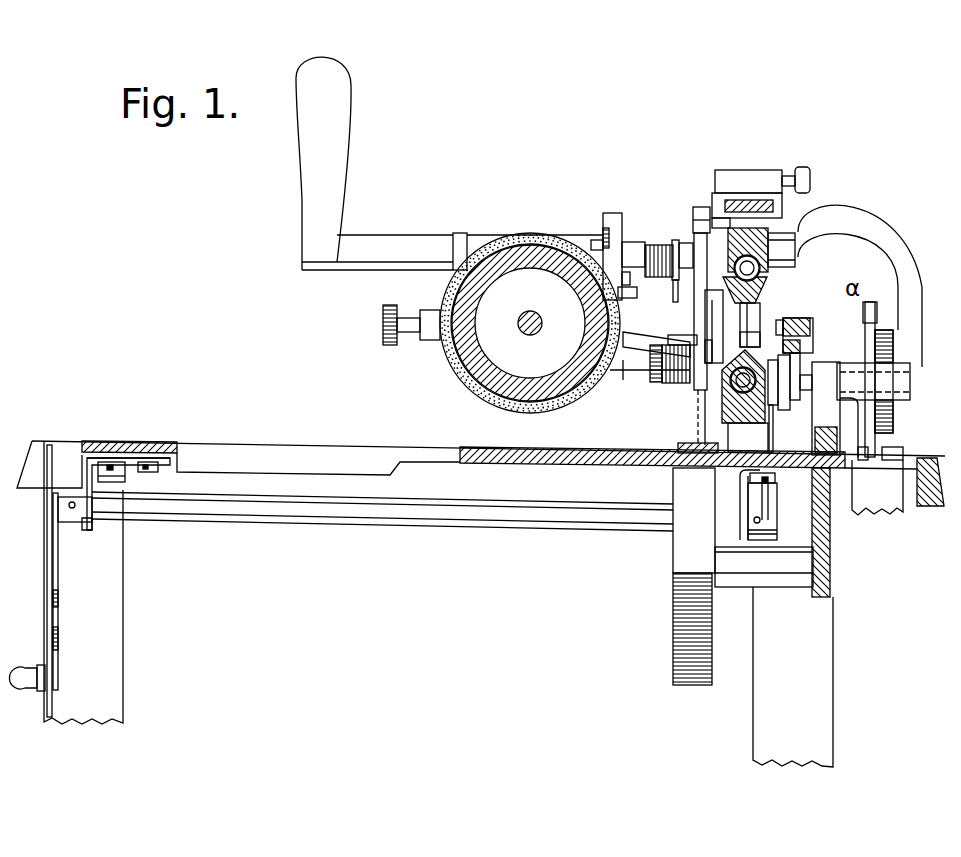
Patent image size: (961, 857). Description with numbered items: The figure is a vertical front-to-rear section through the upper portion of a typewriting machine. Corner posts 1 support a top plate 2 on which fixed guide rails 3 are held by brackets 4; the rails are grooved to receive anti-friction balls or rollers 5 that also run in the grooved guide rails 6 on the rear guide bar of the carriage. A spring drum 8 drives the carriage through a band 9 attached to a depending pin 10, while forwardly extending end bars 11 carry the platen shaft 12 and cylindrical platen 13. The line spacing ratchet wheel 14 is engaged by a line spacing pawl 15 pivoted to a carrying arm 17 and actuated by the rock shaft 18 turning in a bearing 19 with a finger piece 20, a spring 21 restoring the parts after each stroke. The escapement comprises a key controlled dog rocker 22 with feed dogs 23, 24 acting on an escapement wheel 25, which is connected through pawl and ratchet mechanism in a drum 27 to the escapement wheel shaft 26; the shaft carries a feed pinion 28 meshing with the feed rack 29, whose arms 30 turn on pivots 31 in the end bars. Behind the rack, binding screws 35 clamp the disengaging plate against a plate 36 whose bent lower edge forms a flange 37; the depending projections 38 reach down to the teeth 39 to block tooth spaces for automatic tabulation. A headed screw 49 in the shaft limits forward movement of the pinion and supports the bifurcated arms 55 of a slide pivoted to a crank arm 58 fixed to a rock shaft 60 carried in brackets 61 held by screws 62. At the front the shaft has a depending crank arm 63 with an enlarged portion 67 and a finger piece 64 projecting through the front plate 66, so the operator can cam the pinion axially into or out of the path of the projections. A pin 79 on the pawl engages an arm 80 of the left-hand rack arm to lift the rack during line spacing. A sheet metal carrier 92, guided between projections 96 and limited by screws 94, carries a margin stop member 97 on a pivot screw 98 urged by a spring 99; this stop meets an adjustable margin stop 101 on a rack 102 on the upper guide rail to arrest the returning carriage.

The corner post 1 is at (438, 604).
The top plate 2 is at (481, 473).
The fixed guide rail 3 is at (742, 230).
The bracket 4 is at (890, 233).
The anti-friction ball or roller 5 is at (745, 324).
The guide rail 6 is at (763, 281).
The spring drum 8 is at (694, 576).
The band 9 is at (690, 445).
The depending pin 10 is at (697, 400).
The end bar 11 is at (623, 371).
The platen shaft 12 is at (538, 321).
The platen 13 is at (468, 376).
The line spacing ratchet wheel 14 is at (537, 236).
The line spacing pawl 15 is at (613, 223).
The carrying arm 17 is at (602, 242).
The rock shaft 18 is at (385, 241).
The bearing 19 is at (462, 241).
The finger piece 20 is at (323, 163).
The spring 21 is at (658, 247).
The dog rocker 22 is at (877, 487).
The feed dog 23 is at (858, 452).
The feed dog 24 is at (898, 454).
The escapement wheel 25 is at (870, 303).
The escapement wheel shaft 26 is at (863, 366).
The drum 27 is at (888, 353).
The feed pinion 28 is at (778, 404).
The feed rack 29 is at (790, 326).
The arm 30 is at (770, 328).
The pivot 31 is at (676, 336).
The headed screw 35 is at (813, 363).
The plate 36 is at (811, 321).
The flange 37 is at (814, 351).
The disengaging projection 38 is at (800, 374).
The tooth 39 is at (755, 334).
The headed screw 49 is at (748, 424).
The arm 55 is at (773, 413).
The crank arm 58 is at (772, 513).
The rock shaft 60 is at (491, 523).
The bracket 61 is at (89, 494).
The screw 62 is at (128, 470).
The crank arm 63 is at (55, 571).
The finger piece 64 is at (10, 665).
The front plate 66 is at (47, 539).
The enlarged portion 67 is at (55, 622).
The pin 79 is at (632, 334).
The arm 80 is at (628, 345).
The carrier 92 is at (708, 330).
The headed screw 94 is at (706, 356).
The projection 96 is at (707, 286).
The margin stop member 97 is at (707, 300).
The pivot screw 98 is at (652, 378).
The spring 99 is at (670, 385).
The adjustable margin stop 101 is at (700, 207).
The rack 102 is at (735, 201).